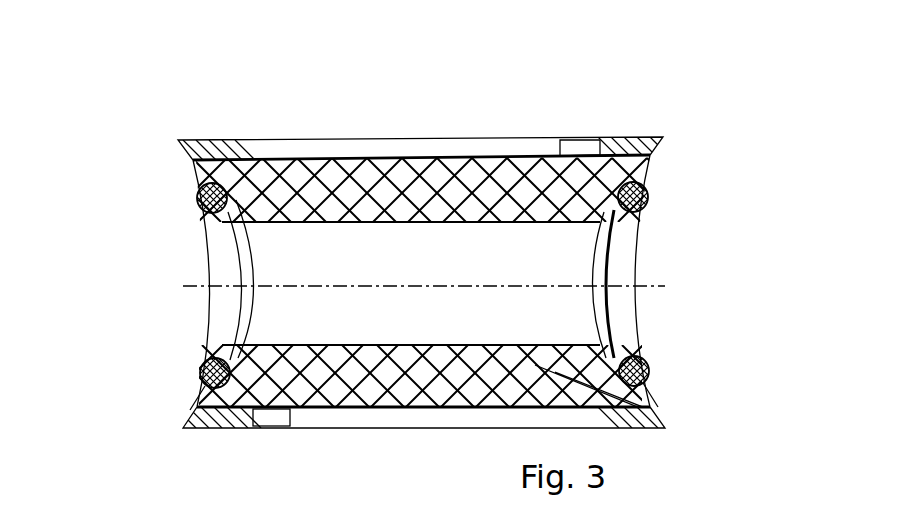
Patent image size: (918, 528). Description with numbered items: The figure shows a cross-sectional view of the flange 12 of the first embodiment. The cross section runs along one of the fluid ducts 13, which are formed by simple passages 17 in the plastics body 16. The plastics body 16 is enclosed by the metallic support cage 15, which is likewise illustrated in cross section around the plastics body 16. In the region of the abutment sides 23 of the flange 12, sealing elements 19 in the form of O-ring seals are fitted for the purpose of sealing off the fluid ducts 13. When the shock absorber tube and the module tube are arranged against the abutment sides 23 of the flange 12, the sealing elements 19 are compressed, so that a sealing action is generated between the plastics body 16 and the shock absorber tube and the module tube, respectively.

The flange 12 is at (253, 110).
The fluid duct 13 is at (185, 252).
The metallic support cage 15 is at (628, 140).
The plastics body 16 is at (663, 430).
The passage 17 is at (553, 226).
The sealing element 19 is at (198, 188).
The abutment side 23 is at (188, 393).